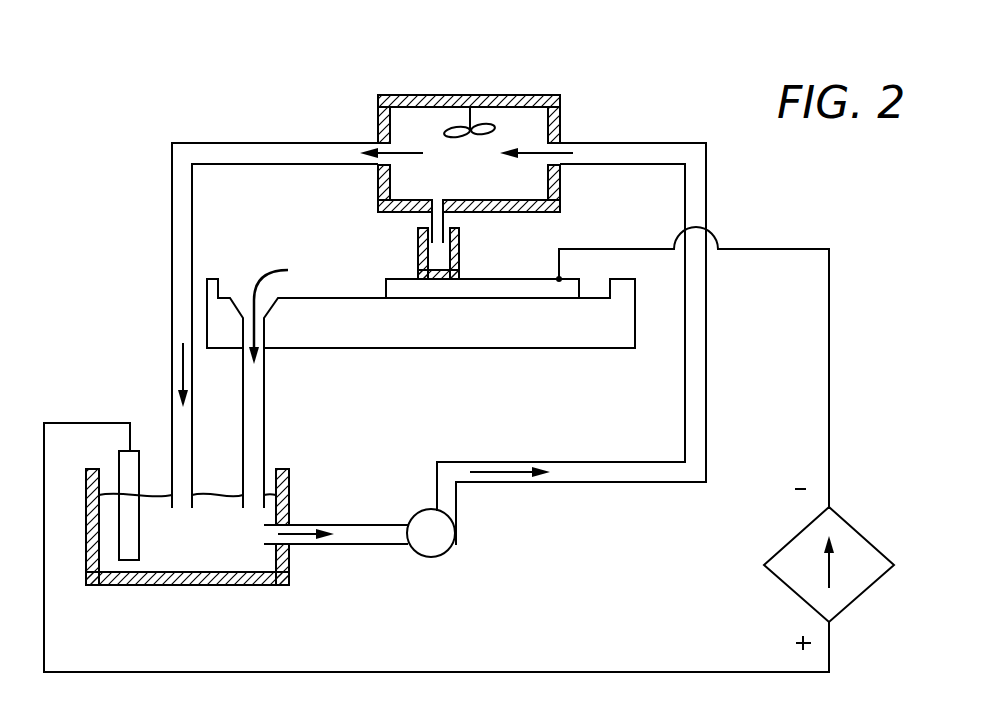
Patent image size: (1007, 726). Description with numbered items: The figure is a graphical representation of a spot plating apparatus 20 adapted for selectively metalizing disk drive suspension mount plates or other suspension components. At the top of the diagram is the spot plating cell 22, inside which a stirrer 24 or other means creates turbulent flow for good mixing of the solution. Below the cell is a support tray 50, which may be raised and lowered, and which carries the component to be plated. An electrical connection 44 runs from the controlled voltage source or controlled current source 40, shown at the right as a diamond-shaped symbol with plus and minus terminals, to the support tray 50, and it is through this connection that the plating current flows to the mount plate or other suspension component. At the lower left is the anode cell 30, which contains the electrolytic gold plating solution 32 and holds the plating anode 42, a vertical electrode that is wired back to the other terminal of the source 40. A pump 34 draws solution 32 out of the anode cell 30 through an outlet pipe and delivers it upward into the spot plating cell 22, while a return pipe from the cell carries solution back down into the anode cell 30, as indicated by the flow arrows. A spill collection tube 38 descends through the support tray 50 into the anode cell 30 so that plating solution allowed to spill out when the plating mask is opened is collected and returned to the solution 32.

The spot plating apparatus 20 is at (196, 104).
The spot plating cell 22 is at (525, 122).
The stirrer 24 is at (483, 122).
The anode cell 30 is at (130, 585).
The electrolytic gold plating solution 32 is at (163, 553).
The pump 34 is at (442, 555).
The spill collection tube 38 is at (265, 412).
The controlled voltage source or controlled current source 40 is at (853, 523).
The plating anode 42 is at (130, 451).
The electrical connection 44 is at (585, 249).
The support tray 50 is at (442, 348).